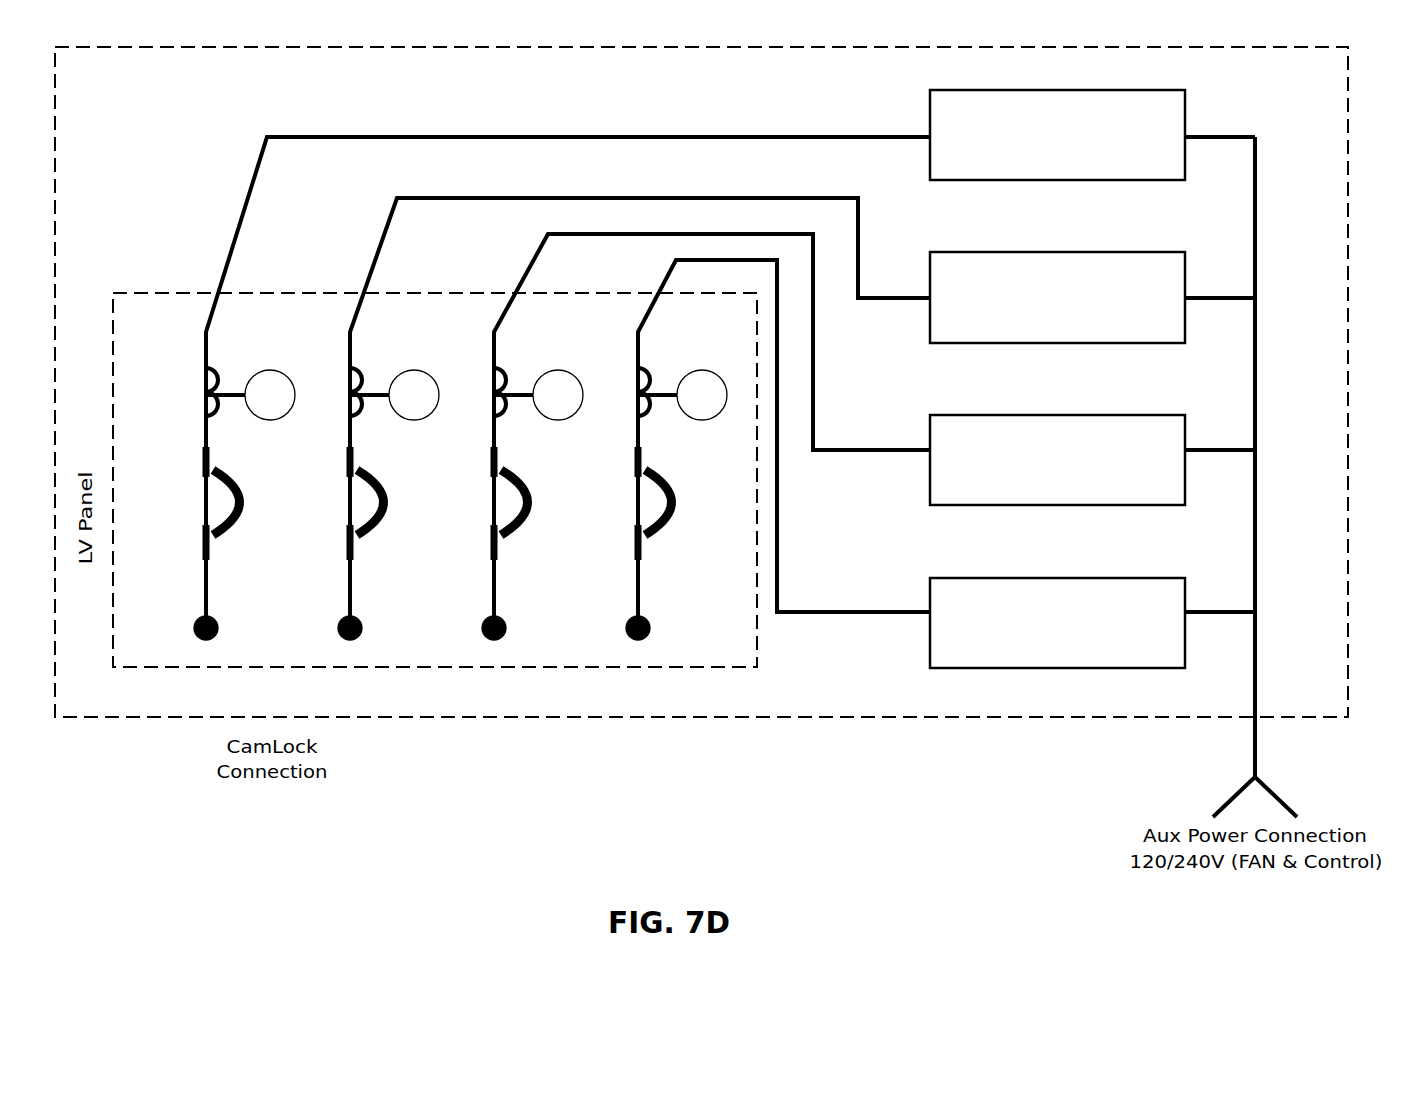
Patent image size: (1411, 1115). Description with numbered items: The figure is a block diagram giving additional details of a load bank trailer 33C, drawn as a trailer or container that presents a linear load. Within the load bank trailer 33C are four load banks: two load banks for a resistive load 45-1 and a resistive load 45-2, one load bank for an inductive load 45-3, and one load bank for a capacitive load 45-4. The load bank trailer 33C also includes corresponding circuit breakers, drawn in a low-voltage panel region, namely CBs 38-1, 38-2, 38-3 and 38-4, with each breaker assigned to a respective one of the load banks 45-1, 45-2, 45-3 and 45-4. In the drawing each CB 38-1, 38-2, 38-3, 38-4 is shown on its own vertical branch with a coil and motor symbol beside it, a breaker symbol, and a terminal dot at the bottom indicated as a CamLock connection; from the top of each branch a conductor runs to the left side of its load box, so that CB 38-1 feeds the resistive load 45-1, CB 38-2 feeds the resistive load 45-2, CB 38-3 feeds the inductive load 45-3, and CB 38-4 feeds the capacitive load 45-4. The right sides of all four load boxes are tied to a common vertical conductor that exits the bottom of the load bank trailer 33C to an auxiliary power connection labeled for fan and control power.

The load bank trailer 33C is at (137, 110).
The CB 38-1 is at (200, 518).
The CB 38-2 is at (344, 518).
The CB 38-3 is at (488, 518).
The CB 38-4 is at (632, 518).
The resistive load 45-1 is at (1035, 158).
The resistive load 45-2 is at (1035, 320).
The inductive load 45-3 is at (1035, 484).
The capacitive load 45-4 is at (1035, 646).